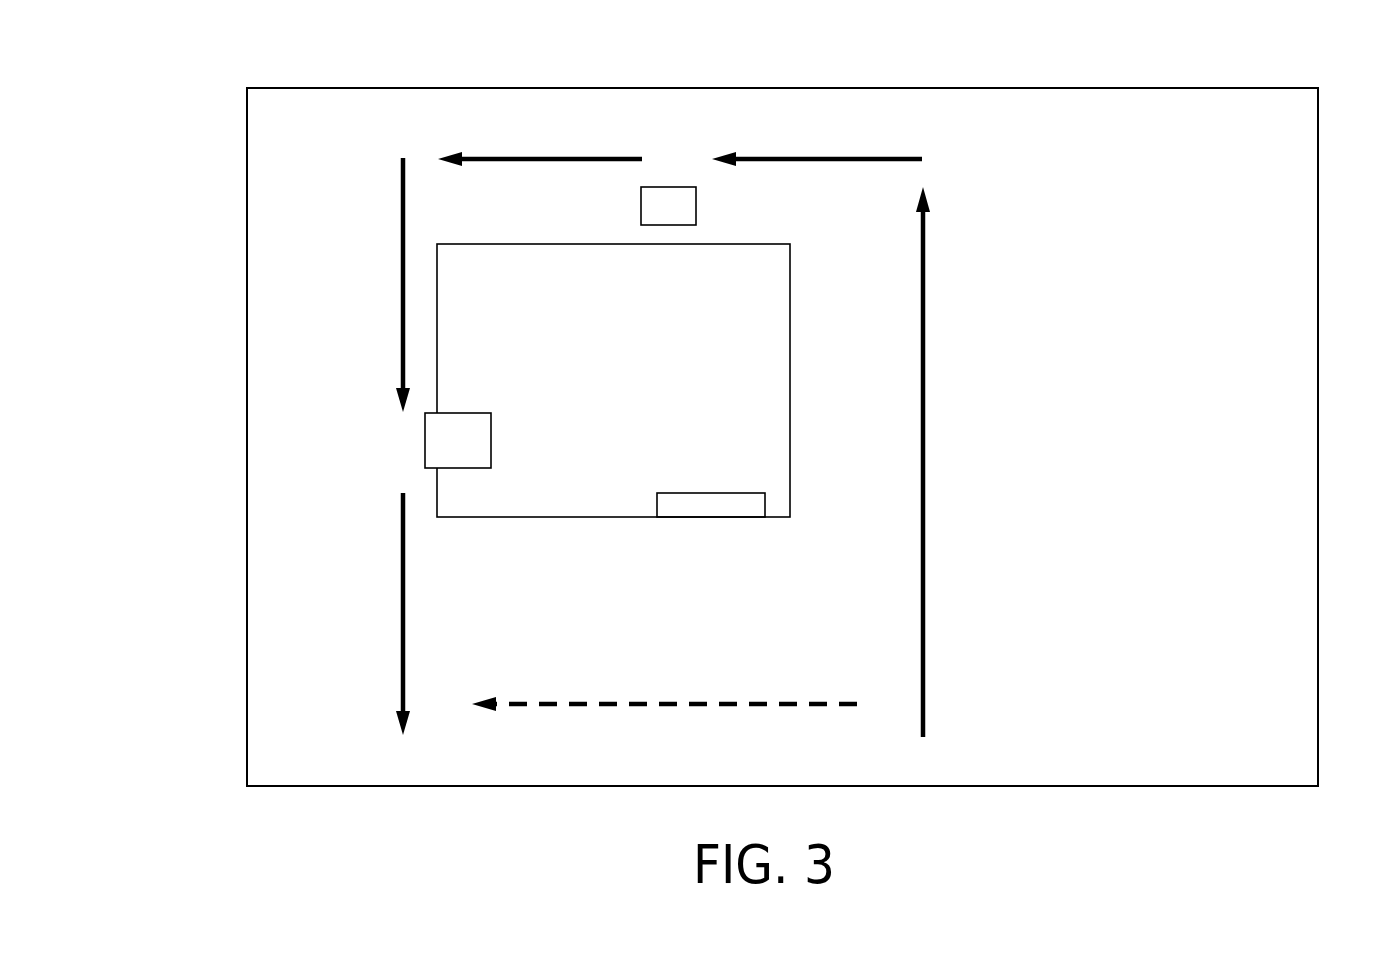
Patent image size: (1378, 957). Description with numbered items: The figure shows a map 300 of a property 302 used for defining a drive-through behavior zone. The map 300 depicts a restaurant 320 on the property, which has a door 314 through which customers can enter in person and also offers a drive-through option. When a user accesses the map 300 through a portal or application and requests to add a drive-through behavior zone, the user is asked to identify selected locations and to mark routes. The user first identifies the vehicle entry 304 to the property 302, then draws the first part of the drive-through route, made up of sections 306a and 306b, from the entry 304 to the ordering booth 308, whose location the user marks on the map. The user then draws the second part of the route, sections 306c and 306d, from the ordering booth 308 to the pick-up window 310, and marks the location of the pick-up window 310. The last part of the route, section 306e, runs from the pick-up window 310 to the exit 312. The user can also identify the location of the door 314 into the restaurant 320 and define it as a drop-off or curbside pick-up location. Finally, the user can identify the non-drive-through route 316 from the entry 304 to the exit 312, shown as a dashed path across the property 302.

The map 300 is at (184, 72).
The property 302 is at (1293, 82).
The vehicle entry 304 is at (950, 768).
The route section 306a is at (925, 367).
The route section 306b is at (835, 158).
The route section 306c is at (516, 158).
The route section 306d is at (401, 300).
The route section 306e is at (401, 585).
The ordering booth 308 is at (666, 226).
The pick-up window 310 is at (465, 412).
The exit 312 is at (404, 768).
The door 314 is at (689, 486).
The non-drive-through route 316 is at (688, 700).
The restaurant 320 is at (503, 290).